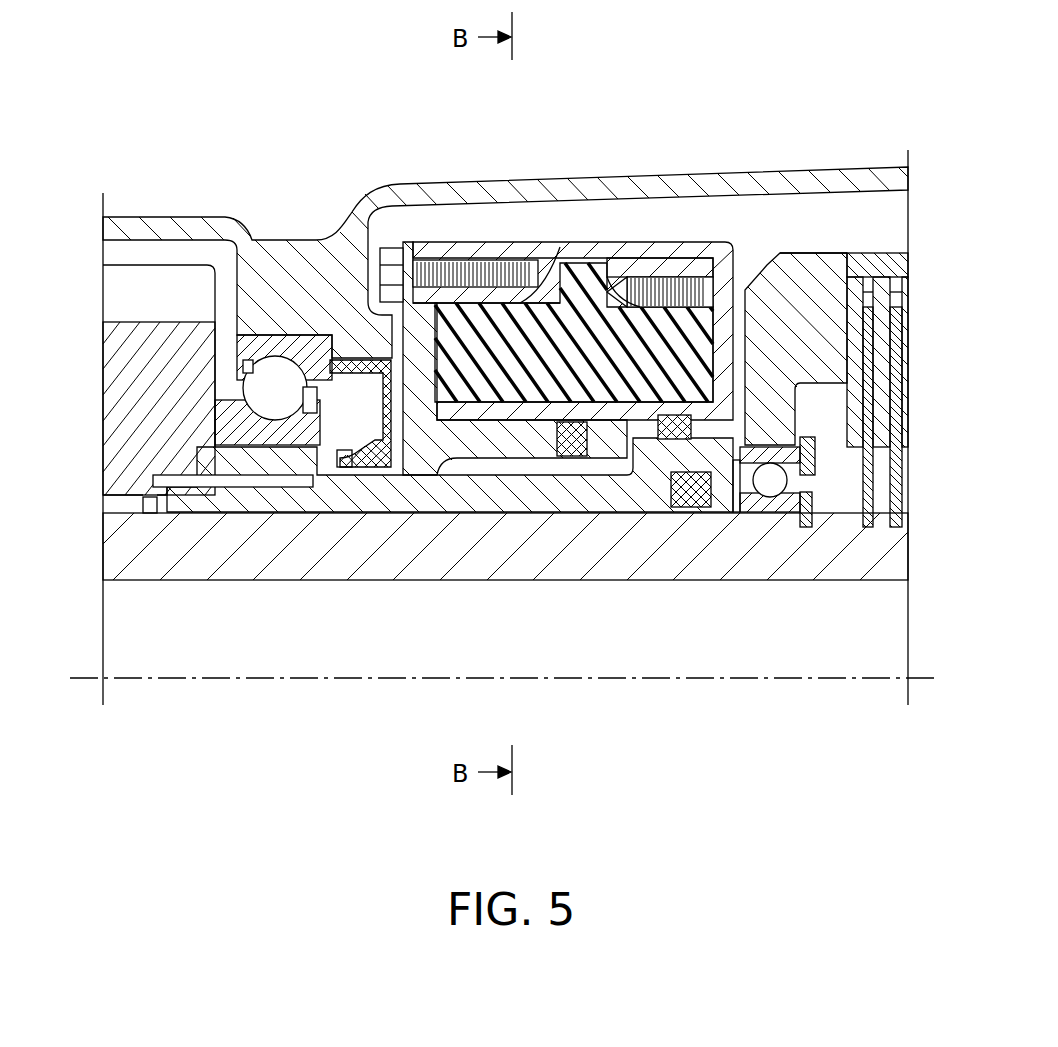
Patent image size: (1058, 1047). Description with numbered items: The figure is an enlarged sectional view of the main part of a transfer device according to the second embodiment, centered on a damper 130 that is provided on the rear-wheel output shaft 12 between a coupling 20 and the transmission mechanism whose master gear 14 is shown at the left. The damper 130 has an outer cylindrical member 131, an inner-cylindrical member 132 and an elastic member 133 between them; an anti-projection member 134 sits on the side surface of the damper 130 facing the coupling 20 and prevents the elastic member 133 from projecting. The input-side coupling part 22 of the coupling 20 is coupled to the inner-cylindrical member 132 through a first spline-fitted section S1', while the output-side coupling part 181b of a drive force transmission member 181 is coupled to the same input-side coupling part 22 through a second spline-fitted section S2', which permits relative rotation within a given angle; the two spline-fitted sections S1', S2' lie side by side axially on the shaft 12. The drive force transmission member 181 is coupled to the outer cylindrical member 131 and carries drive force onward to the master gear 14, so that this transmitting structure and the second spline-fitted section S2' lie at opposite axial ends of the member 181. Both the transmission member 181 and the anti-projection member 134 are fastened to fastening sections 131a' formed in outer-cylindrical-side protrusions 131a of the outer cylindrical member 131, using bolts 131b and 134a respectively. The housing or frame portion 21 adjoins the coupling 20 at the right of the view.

The rear-wheel output shaft 12 is at (120, 539).
The master gear 14 is at (120, 374).
The coupling 20 is at (888, 245).
The stator frame 21 is at (845, 252).
The input-side coupling part 22 is at (616, 462).
The damper 130 is at (598, 230).
The outer cylindrical member 131 is at (572, 242).
The outer-cylindrical-side protrusion 131a is at (582, 219).
The fastening section 131a' is at (605, 202).
The bolt 131b is at (384, 246).
The inner-cylindrical member 132 is at (662, 447).
The elastic member 133 is at (622, 256).
The anti-projection member 134 is at (748, 278).
The bolt 134a is at (790, 250).
The drive force transmission member 181 is at (317, 243).
The output-side coupling part 181b is at (480, 442).
The first spline-fitted section S1' is at (583, 589).
The second spline-fitted section S2' is at (494, 589).